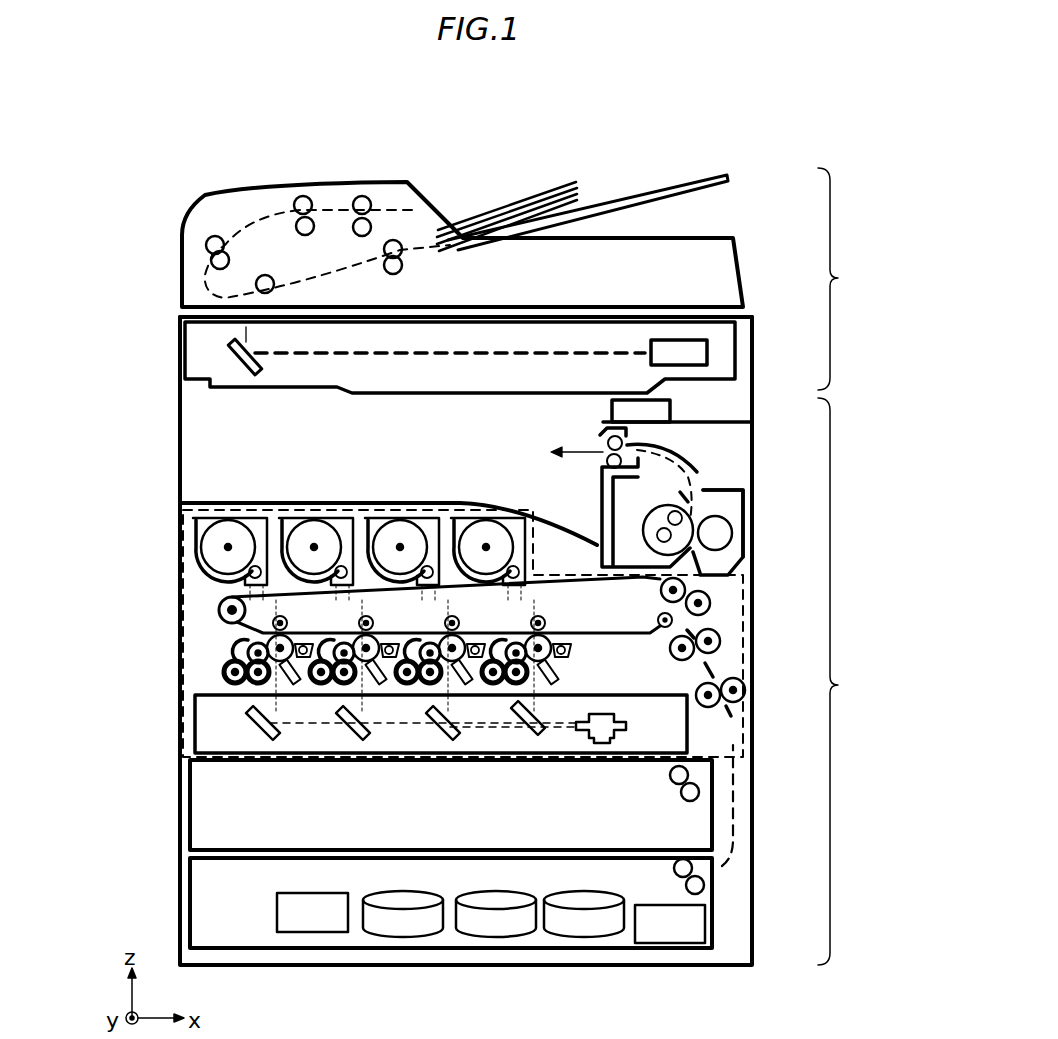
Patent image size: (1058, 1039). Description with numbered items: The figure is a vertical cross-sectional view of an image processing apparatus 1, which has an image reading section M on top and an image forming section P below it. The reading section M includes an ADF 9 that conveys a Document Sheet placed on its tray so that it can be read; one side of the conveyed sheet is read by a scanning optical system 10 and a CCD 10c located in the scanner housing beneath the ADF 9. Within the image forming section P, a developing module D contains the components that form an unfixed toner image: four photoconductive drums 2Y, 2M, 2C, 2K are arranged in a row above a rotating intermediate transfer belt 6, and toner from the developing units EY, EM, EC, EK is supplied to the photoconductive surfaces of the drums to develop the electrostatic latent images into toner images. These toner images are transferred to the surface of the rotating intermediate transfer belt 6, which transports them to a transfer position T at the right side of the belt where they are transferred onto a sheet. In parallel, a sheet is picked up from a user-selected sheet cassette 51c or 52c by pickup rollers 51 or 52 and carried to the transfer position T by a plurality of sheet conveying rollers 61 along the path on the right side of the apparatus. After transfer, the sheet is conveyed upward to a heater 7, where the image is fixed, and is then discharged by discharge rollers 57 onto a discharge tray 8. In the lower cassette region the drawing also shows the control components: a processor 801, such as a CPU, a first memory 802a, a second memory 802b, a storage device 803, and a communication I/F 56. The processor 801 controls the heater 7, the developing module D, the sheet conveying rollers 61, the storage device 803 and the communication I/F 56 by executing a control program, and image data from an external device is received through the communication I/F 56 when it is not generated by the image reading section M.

The image processing apparatus 1 is at (610, 174).
The ADF 9 is at (183, 232).
The scanning optical system 10 is at (235, 353).
The CCD 10c is at (708, 352).
The discharge rollers 57 is at (610, 442).
The heater 7 is at (752, 497).
The discharge tray 8 is at (530, 510).
The rotating intermediate transfer belt 6 is at (645, 578).
The developing module D is at (178, 630).
The photoconductive drum 2Y is at (278, 620).
The photoconductive drum 2M is at (380, 612).
The photoconductive drum 2C is at (466, 612).
The photoconductive drum 2K is at (557, 614).
The developing unit EY is at (225, 664).
The developing unit EM is at (323, 655).
The developing unit EC is at (405, 682).
The developing unit EK is at (483, 680).
The transfer position T is at (710, 603).
The sheet conveying rollers 61 is at (720, 642).
The sheet cassette 51c is at (205, 812).
The pickup roller 51 is at (676, 783).
The sheet cassette 52c is at (205, 905).
The pickup roller 52 is at (674, 873).
The processor 801 is at (313, 932).
The first memory 802a is at (400, 937).
The second memory 802b is at (497, 937).
The storage device 803 is at (585, 937).
The communication I/F 56 is at (670, 943).
The image reading section M is at (842, 279).
The image forming section P is at (839, 681).
The document sheet Document Sheet is at (492, 192).